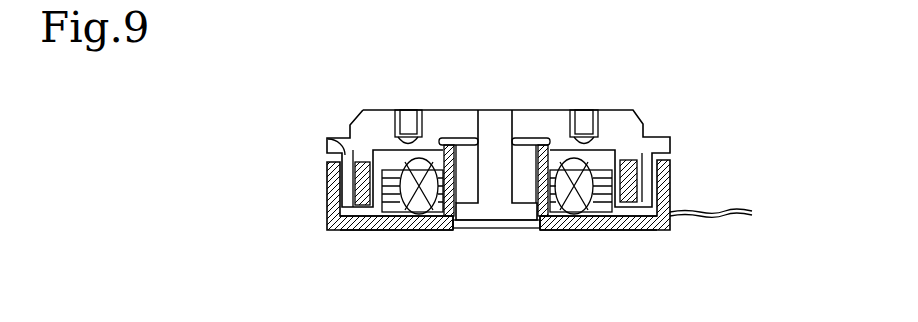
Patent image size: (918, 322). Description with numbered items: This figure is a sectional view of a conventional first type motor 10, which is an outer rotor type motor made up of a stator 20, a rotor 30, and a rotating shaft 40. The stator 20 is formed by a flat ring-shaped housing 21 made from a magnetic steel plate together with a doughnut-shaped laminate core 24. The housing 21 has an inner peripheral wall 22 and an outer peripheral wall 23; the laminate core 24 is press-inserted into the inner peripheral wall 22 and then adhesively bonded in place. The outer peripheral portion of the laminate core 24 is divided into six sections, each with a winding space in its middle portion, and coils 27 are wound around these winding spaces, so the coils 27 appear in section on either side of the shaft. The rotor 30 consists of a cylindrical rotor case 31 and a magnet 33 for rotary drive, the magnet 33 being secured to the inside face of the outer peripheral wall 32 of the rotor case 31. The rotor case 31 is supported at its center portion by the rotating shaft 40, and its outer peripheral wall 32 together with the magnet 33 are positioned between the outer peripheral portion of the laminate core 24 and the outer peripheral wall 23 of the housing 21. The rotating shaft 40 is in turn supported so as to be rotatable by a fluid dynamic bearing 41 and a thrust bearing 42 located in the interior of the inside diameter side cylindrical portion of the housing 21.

The motor 10 is at (518, 238).
The stator 20 is at (670, 191).
The housing 21 is at (613, 221).
The inner peripheral wall 22 is at (452, 220).
The outer peripheral wall 23 is at (328, 208).
The laminate core 24 is at (605, 168).
The coil 27 is at (562, 150).
The rotor 30 is at (670, 144).
The rotor case 31 is at (431, 108).
The outer peripheral wall 32 is at (353, 178).
The magnet 33 is at (329, 140).
The rotating shaft 40 is at (490, 120).
The fluid dynamic bearing 41 is at (518, 155).
The thrust bearing 42 is at (487, 228).